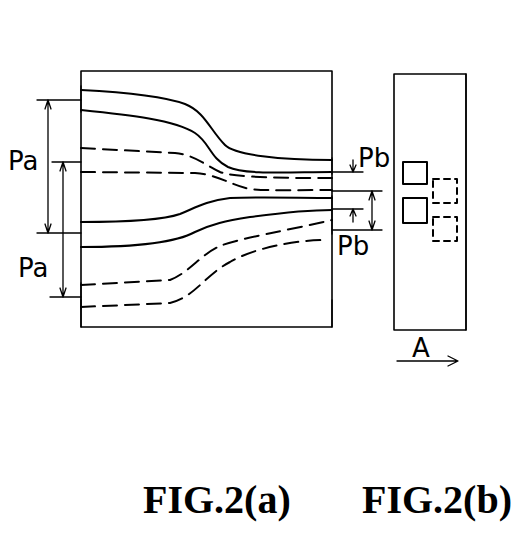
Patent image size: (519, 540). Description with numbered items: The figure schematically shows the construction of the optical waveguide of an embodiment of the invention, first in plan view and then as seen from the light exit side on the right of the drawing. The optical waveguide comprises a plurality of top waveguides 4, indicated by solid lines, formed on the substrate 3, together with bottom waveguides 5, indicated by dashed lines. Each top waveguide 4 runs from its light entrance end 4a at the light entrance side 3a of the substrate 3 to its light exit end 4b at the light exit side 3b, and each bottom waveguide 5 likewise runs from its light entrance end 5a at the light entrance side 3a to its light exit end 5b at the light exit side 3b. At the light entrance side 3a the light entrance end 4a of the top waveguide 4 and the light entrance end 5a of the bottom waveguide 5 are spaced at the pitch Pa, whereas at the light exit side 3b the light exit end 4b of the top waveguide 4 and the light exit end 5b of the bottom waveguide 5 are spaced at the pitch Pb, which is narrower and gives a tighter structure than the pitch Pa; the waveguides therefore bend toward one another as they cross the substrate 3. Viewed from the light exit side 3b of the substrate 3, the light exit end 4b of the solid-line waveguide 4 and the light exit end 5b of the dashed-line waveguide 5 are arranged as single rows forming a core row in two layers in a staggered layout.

In FIG. 2A, the substrate 3 is at (256, 80).
In FIG. 2B, the substrate 3 is at (465, 297).
In FIG. 2A, the light entrance side 3a is at (79, 330).
In FIG. 2A, the light exit side 3b is at (333, 330).
In FIG. 2B, the light exit side 3b is at (459, 95).
In FIG. 2A, the top waveguide 4 is at (166, 100).
In FIG. 2A, the light entrance end of the top waveguide 4a is at (81, 88).
In FIG. 2A, the light exit end of the top waveguide 4b is at (333, 167).
In FIG. 2B, the light exit end of the top waveguide 4b is at (410, 214).
In FIG. 2A, the bottom waveguide 5 is at (131, 300).
In FIG. 2A, the light entrance end of the bottom waveguide 5a is at (80, 300).
In FIG. 2A, the light exit end of the bottom waveguide 5b is at (334, 240).
In FIG. 2B, the light exit end of the bottom waveguide 5b is at (450, 233).